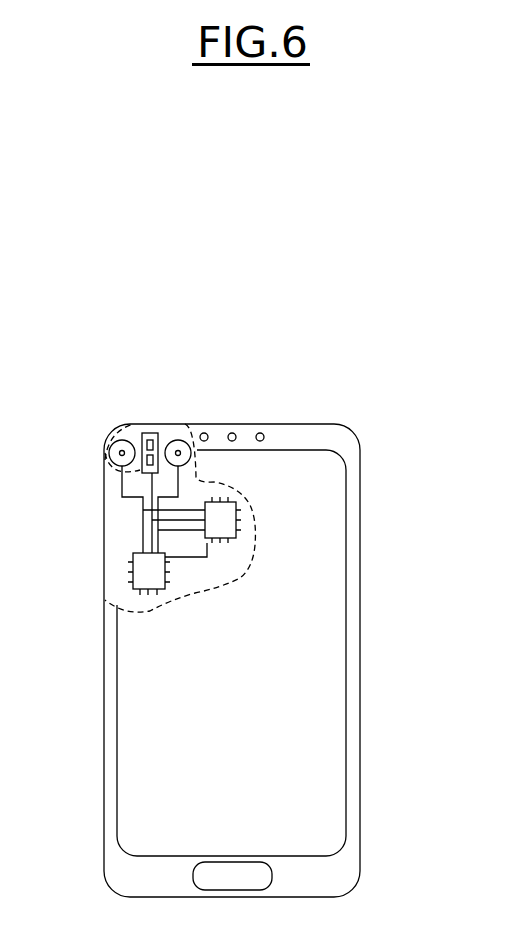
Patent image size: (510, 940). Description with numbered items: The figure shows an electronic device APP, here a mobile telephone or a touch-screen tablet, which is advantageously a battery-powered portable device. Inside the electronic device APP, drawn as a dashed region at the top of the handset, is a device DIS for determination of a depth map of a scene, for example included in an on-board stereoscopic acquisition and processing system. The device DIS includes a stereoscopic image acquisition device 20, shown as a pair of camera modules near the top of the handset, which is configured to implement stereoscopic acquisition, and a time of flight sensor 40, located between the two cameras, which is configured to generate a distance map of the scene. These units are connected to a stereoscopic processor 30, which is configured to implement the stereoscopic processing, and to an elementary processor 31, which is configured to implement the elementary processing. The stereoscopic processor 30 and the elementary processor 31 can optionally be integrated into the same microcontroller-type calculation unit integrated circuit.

The stereoscopic image acquisition device 20 is at (172, 441).
The time of flight sensor 40 is at (137, 480).
The stereoscopic processor 30 is at (145, 575).
The elementary processor 31 is at (223, 520).
The device for determination of a depth map DIS is at (120, 547).
The electronic device APP is at (355, 672).